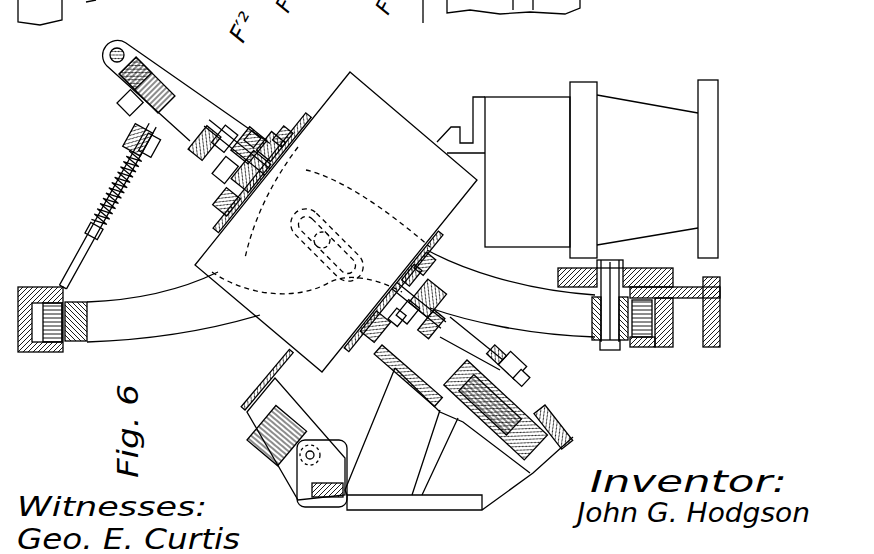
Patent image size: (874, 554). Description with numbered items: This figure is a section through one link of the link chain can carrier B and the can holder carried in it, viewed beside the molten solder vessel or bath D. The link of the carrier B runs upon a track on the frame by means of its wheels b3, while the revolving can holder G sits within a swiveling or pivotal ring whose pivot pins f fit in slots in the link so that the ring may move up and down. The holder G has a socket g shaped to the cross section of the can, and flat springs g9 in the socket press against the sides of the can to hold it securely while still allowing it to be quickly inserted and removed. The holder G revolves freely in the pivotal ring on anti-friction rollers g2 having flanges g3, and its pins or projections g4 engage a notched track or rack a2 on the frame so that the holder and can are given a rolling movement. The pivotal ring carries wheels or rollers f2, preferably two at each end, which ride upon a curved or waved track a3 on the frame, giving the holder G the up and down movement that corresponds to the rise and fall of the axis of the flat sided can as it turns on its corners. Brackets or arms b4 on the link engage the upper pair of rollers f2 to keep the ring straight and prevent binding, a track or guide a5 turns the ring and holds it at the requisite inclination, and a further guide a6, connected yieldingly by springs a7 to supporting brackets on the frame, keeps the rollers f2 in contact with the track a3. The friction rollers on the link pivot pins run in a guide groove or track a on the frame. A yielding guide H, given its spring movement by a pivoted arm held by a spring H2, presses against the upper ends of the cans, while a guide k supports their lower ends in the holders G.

The guide groove or track a is at (661, 347).
The notched track or rack a2 is at (397, 373).
The curved or waved track a3 is at (534, 416).
The track or guide a5 is at (567, 433).
The guide or track a6 is at (133, 140).
The springs a7 is at (108, 177).
The wheels b3 is at (637, 268).
The brackets or arms b4 is at (192, 100).
The link chain can carrier B is at (147, 338).
The molten solder vessel or bath D is at (601, 169).
The pivot pins f is at (325, 243).
The wheels or rollers f2 is at (490, 427).
The socket g is at (283, 140).
The anti-friction rollers g2 is at (230, 150).
The flanges g3 is at (218, 162).
The pins or projections g4 is at (218, 210).
The flat springs g9 is at (238, 212).
The revolving can holder G is at (267, 142).
The yielding guide H is at (274, 362).
The spring H2 is at (253, 443).
The guide k is at (461, 146).